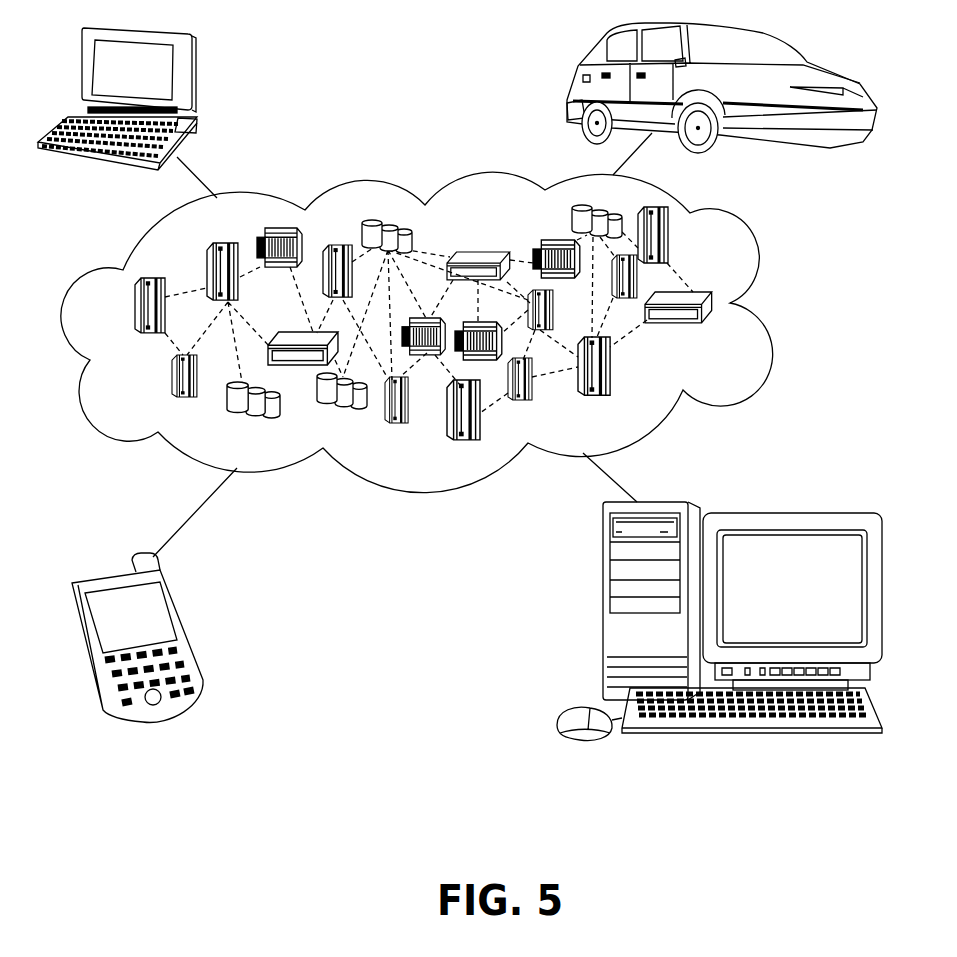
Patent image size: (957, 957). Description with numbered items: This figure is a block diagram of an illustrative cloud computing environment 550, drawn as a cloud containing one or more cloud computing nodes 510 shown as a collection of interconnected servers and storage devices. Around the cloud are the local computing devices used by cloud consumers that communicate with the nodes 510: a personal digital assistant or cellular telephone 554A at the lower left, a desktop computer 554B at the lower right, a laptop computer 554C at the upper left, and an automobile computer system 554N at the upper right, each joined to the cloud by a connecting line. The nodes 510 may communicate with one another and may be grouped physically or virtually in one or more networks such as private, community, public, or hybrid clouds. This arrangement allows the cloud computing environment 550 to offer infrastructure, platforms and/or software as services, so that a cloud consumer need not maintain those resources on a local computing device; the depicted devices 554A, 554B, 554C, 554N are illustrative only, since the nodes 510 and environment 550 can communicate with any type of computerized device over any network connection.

The cloud computing nodes 510 is at (473, 332).
The cloud computing environment 550 is at (733, 330).
The personal digital assistant or cellular telephone 554A is at (185, 630).
The desktop computer 554B is at (603, 608).
The laptop computer 554C is at (193, 75).
The automobile computer system 554N is at (577, 82).